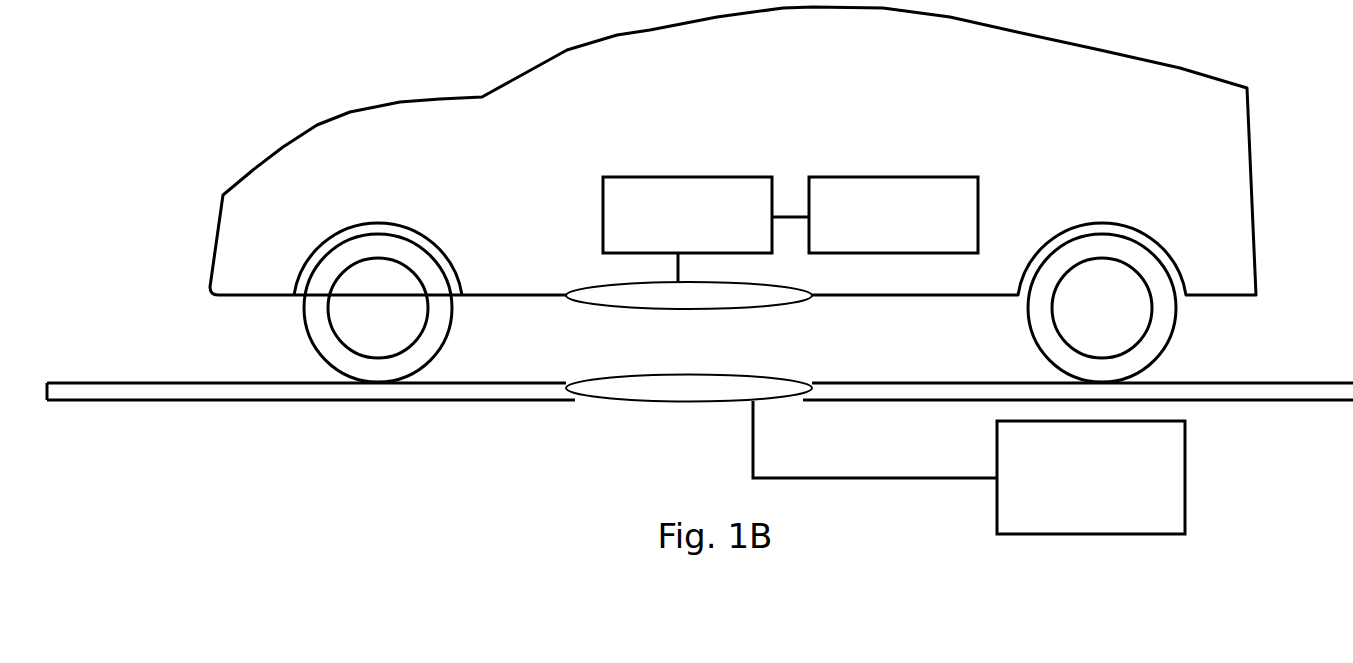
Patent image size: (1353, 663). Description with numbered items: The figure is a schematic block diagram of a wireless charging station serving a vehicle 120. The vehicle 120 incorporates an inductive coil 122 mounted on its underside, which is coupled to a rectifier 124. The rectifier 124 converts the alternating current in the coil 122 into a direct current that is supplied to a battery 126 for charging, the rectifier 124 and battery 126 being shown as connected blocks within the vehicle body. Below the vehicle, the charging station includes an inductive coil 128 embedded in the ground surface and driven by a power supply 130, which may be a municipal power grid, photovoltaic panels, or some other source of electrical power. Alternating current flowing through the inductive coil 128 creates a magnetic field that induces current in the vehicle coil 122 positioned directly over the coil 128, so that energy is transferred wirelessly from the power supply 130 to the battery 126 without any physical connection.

The vehicle 120 is at (713, 136).
The inductive coil 122 is at (603, 293).
The rectifier 124 is at (757, 229).
The battery 126 is at (955, 229).
The inductive coil 128 is at (778, 392).
The power supply 130 is at (1070, 505).